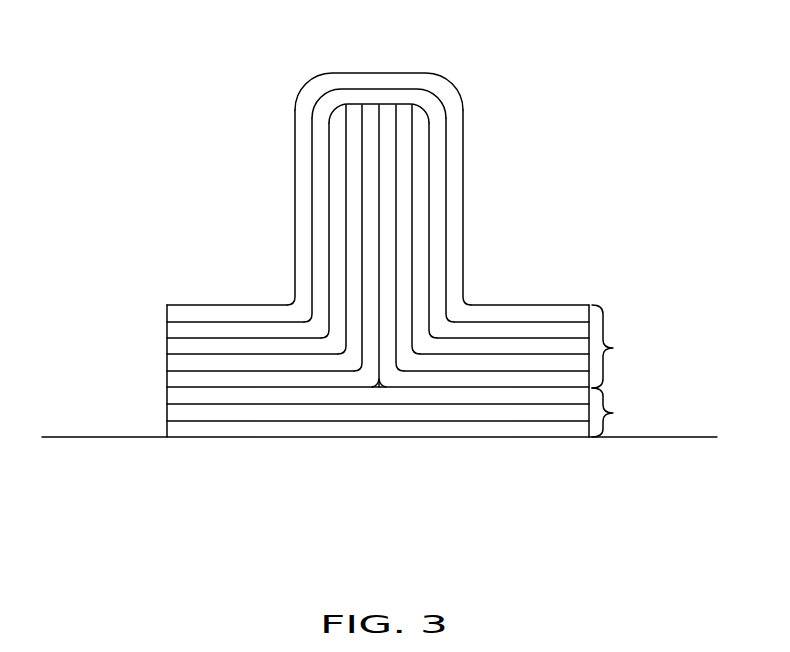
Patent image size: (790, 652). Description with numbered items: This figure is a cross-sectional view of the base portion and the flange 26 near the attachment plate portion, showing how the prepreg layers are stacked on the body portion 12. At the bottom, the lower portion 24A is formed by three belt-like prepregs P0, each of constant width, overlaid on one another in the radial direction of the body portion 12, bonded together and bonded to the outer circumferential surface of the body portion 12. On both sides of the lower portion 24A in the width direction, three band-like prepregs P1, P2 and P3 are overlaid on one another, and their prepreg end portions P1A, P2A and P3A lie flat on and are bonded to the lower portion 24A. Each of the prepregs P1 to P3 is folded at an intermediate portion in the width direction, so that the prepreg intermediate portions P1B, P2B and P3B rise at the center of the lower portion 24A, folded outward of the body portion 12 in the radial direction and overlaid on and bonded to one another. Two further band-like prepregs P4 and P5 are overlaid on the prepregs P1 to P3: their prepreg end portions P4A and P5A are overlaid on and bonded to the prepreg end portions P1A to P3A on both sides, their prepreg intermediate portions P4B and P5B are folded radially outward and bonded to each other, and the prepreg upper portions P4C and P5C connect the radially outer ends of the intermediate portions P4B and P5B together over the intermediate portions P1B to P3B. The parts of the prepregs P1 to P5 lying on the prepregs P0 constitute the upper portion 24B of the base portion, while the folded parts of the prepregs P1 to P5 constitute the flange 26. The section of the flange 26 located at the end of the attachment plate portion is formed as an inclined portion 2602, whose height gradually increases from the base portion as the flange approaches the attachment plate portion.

The body portion 12 is at (50, 437).
The flange 26 is at (463, 255).
The inclined portion 2602 is at (422, 72).
The lower portion 24A is at (657, 412).
The upper portion 24B is at (657, 346).
The prepreg P0 is at (180, 397).
The prepreg P1 is at (180, 378).
The prepreg P2 is at (180, 362).
The prepreg P3 is at (180, 345).
The prepreg P4 is at (180, 328).
The prepreg P5 is at (180, 313).
The prepreg end portion P1A is at (327, 378).
The prepreg end portion P2A is at (312, 360).
The prepreg end portion P3A is at (288, 347).
The prepreg end portion P4A is at (220, 333).
The prepreg end portion P5A is at (267, 310).
The prepreg intermediate portion P1B is at (368, 293).
The prepreg intermediate portion P2B is at (352, 280).
The prepreg intermediate portion P3B is at (336, 262).
The prepreg intermediate portion P4B is at (318, 233).
The prepreg intermediate portion P5B is at (303, 198).
The prepreg upper portion P4C is at (387, 97).
The prepreg upper portion P5C is at (365, 80).